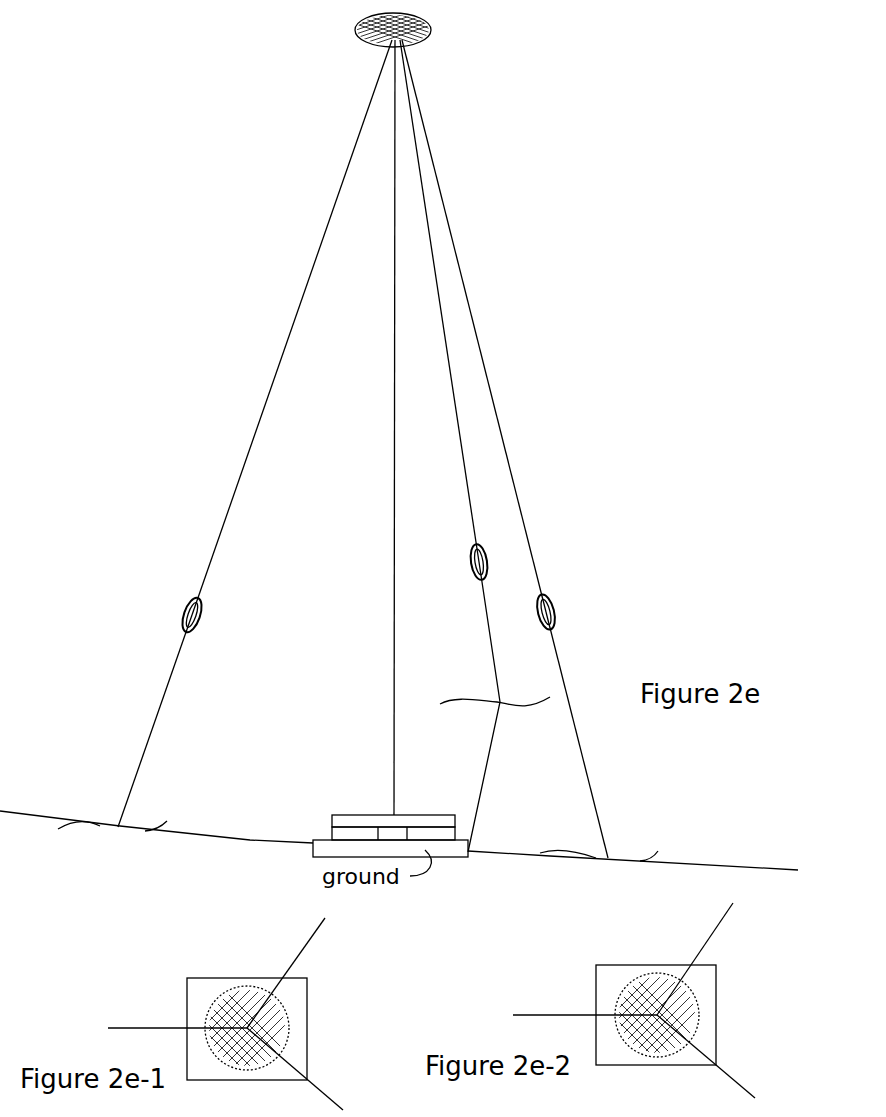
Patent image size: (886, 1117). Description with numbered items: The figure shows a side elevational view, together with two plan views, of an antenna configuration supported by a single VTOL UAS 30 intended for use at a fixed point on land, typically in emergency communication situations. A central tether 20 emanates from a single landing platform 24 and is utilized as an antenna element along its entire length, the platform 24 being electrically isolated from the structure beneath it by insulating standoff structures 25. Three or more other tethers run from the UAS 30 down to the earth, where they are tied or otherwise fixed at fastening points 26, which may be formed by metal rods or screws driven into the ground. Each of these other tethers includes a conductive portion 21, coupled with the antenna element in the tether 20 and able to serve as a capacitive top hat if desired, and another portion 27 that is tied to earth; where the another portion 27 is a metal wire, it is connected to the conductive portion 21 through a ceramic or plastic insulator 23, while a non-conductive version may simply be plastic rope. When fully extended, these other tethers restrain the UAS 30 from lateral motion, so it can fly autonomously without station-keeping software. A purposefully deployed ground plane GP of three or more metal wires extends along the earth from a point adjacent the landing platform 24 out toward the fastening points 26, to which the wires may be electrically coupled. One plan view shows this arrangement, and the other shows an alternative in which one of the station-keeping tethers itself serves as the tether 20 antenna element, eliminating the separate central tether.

In FIG. 2E, the VTOL UAS 30 is at (436, 27).
In FIG. 2E, the conductive portion 21 is at (230, 497).
In FIG. 2E1, the conductive portion 21 is at (305, 949).
In FIG. 2E2, the conductive portion 21 is at (715, 935).
In FIG. 2E, the another portion 27 is at (170, 672).
In FIG. 2E, the insulator 23 is at (185, 606).
In FIG. 2E, the tether 20 is at (395, 665).
In FIG. 2E2, the tether 20 is at (728, 1078).
In FIG. 2E, the landing platform 24 is at (462, 825).
In FIG. 2E1, the landing platform 24 is at (298, 990).
In FIG. 2E2, the landing platform 24 is at (705, 978).
In FIG. 2E, the insulating standoff structures 25 is at (330, 833).
In FIG. 2E, the fastening points 26 is at (118, 826).
In FIG. 2E, the ground plane GP is at (207, 836).